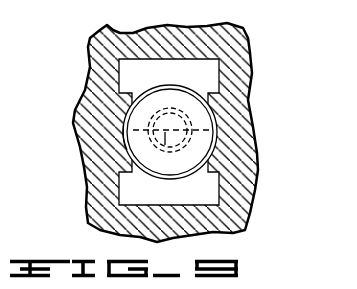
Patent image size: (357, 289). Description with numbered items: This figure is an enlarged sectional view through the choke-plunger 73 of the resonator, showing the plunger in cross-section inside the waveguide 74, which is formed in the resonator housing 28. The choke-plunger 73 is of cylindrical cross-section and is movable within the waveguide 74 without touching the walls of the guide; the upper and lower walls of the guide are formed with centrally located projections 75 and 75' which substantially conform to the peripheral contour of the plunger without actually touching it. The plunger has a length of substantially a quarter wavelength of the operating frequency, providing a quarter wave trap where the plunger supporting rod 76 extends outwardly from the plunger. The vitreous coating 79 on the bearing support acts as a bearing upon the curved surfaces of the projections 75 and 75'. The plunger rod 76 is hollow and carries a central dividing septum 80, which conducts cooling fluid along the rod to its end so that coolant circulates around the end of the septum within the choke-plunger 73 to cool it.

The resonator housing 28 is at (247, 185).
The choke-plunger 73 is at (200, 128).
The waveguide 74 is at (222, 198).
The projection 75 is at (219, 132).
The projection 75' is at (82, 147).
The plunger supporting rod 76 is at (133, 131).
The vitreous coating 79 is at (171, 85).
The central dividing septum 80 is at (165, 145).